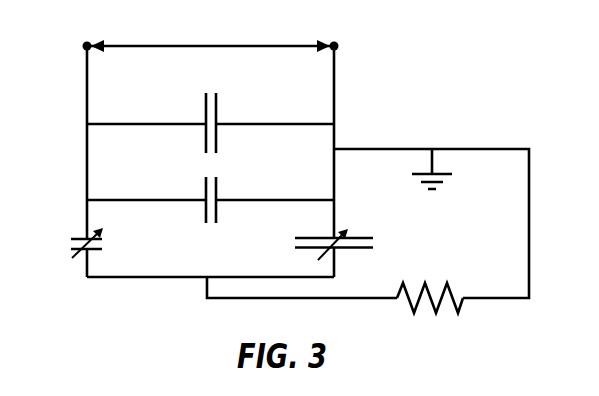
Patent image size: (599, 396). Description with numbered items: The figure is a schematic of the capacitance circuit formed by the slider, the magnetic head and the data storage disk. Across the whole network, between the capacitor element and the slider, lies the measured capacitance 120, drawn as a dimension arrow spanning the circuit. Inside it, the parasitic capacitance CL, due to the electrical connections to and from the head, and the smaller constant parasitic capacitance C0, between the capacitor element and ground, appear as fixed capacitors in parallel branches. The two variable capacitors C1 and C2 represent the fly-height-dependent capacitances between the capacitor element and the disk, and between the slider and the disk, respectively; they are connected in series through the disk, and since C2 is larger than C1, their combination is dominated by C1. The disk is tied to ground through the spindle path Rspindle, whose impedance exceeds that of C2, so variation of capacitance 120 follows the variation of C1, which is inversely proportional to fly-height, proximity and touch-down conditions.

The capacitance 120 is at (174, 45).
The parasitic capacitance CL is at (228, 121).
The parasitic capacitance C0 is at (229, 194).
The capacitance C1 is at (69, 244).
The capacitance C2 is at (316, 244).
The conducting path through the spindle Rspindle is at (430, 277).